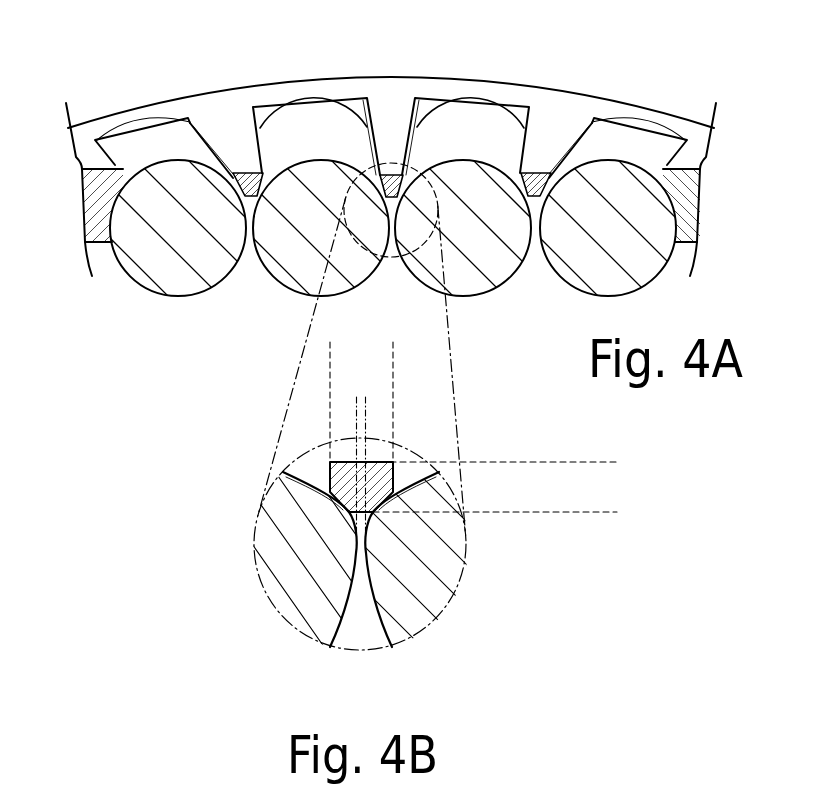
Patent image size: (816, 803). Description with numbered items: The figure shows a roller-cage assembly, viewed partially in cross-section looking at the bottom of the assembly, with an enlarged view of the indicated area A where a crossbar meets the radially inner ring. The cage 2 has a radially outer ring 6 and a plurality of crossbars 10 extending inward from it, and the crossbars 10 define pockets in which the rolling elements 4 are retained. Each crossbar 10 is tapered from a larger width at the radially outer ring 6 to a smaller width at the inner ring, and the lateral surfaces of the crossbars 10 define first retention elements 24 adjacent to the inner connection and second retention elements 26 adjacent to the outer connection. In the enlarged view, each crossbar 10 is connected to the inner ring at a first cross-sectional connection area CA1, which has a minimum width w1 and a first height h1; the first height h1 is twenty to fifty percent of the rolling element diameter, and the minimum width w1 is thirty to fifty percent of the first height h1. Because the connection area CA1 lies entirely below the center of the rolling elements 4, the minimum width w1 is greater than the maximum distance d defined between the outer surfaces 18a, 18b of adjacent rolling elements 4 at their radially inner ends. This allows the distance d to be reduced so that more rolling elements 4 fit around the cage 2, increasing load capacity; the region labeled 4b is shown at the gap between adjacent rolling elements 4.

In FIG. 4A, the cage 2 is at (560, 117).
In FIG. 4A, the rolling elements 4 is at (593, 257).
In FIG. 4B, the rolling elements 4 is at (313, 625).
In FIG. 4A, the ring joint region 4b is at (410, 172).
In FIG. 4A, the radially outer ring 6 is at (508, 97).
In FIG. 4A, the crossbars 10 is at (393, 110).
In FIG. 4A, the first retention elements 24 is at (250, 157).
In FIG. 4A, the second retention elements 26 is at (262, 143).
In FIG. 4B, the outer surface 18a is at (356, 599).
In FIG. 4B, the outer surface 18b is at (365, 590).
In FIG. 4B, the gap region A is at (337, 482).
In FIG. 4B, the first cross-sectional connection area CA1 is at (381, 484).
In FIG. 4B, the minimum width w1 is at (393, 343).
In FIG. 4B, the maximum distance d is at (387, 398).
In FIG. 4B, the first height h1 is at (603, 462).